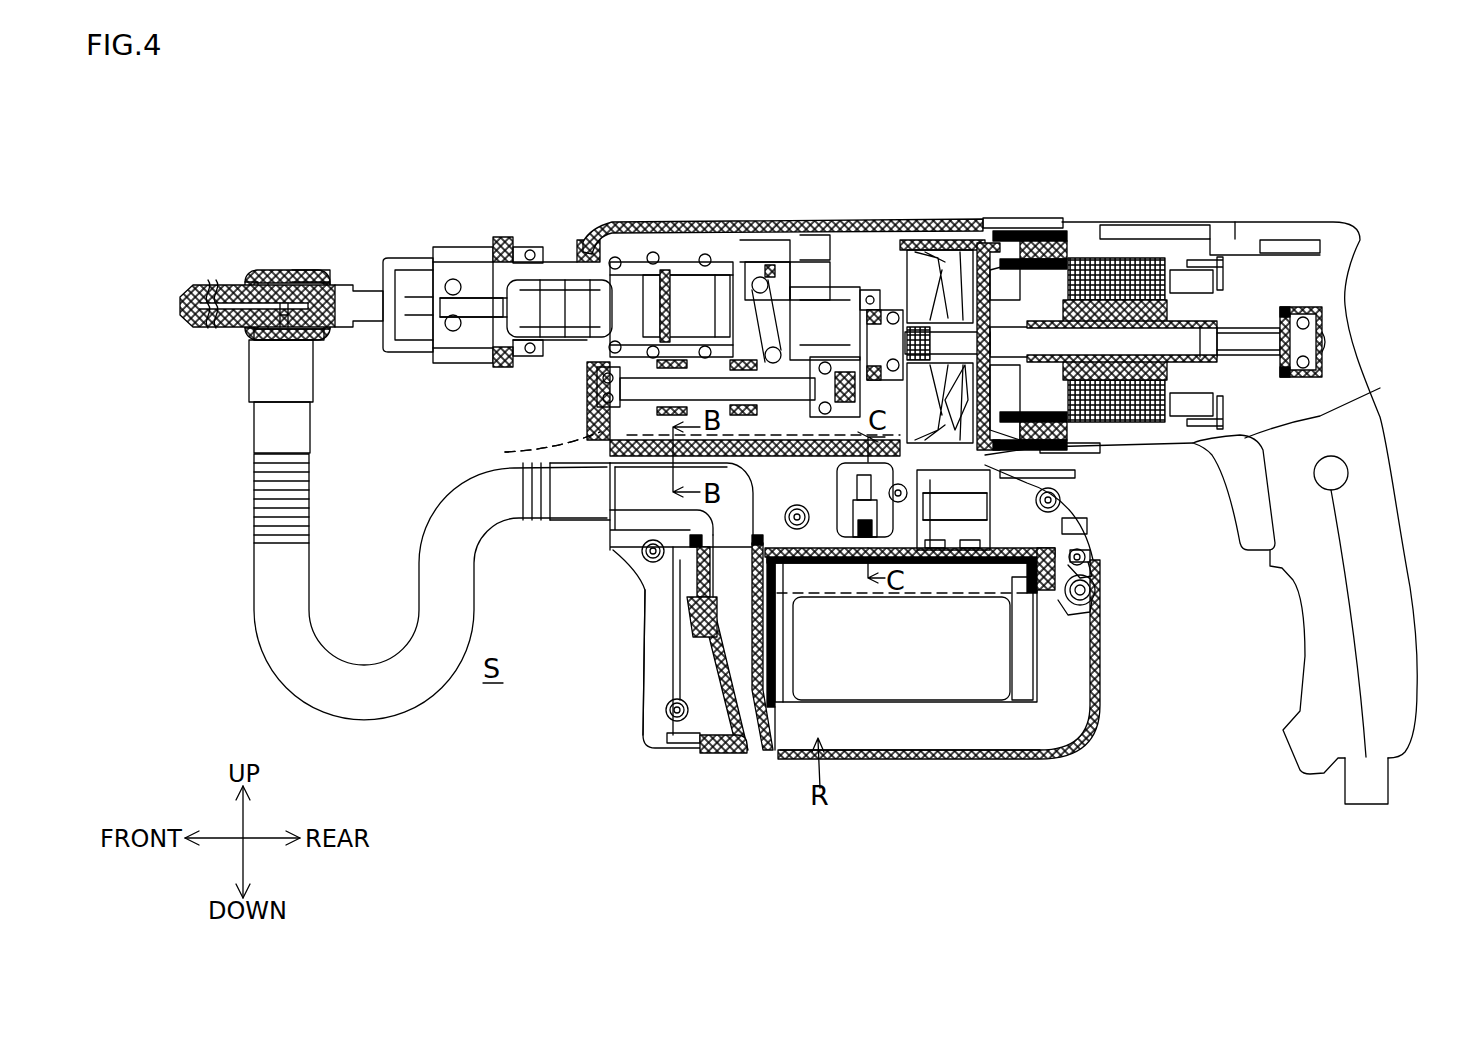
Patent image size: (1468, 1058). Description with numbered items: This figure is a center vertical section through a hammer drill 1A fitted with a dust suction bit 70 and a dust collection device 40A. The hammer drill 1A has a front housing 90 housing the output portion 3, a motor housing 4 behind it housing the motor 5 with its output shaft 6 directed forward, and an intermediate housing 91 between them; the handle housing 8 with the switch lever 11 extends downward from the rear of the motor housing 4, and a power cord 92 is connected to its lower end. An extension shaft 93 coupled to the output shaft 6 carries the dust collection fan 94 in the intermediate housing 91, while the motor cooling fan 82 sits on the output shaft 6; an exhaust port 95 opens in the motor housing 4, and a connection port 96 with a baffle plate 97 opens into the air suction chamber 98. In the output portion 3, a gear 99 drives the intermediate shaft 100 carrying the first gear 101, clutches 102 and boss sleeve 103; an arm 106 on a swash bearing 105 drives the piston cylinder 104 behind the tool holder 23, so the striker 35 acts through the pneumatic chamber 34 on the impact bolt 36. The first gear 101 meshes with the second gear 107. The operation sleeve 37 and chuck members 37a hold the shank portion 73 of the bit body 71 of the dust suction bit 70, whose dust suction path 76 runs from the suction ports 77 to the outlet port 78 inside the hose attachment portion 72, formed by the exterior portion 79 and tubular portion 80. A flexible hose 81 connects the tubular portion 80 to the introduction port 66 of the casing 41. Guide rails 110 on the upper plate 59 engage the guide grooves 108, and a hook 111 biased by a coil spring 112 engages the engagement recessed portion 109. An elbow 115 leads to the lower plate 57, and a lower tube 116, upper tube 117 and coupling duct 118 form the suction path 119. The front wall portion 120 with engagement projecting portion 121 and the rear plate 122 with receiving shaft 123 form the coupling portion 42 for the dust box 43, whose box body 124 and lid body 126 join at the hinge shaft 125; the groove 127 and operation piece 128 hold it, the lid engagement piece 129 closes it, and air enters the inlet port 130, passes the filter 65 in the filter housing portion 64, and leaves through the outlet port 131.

The hammer drill 1A is at (1005, 128).
The output portion 3 is at (832, 222).
The motor housing 4 is at (1180, 222).
The motor 5 is at (1136, 275).
The output shaft 6 is at (1050, 335).
The handle housing 8 is at (1390, 482).
The switch lever 11 is at (1248, 533).
The tool holder 23 is at (578, 250).
The pneumatic chamber 34 is at (727, 280).
The striker 35 is at (642, 252).
The impact bolt 36 is at (512, 272).
The operation sleeve 37 is at (466, 260).
The chuck members 37a is at (456, 282).
The dust collection device 40A is at (620, 693).
The casing 41 is at (638, 590).
The coupling portion 42 is at (683, 720).
The dust box 43 is at (1112, 688).
The lower plate 57 is at (1060, 540).
The upper plate 59 is at (770, 545).
The filter housing portion 64 is at (1020, 693).
The filter 65 is at (853, 688).
The introduction port 66 is at (583, 522).
The dust suction bit 70 is at (257, 262).
The bit body 71 is at (237, 290).
The hose attachment portion 72 is at (300, 272).
The shank portion 73 is at (428, 290).
The dust suction path 76 is at (268, 300).
The suction ports 77 is at (190, 292).
The outlet port 78 is at (262, 332).
The exterior portion 79 is at (325, 286).
The tubular portion 80 is at (308, 388).
The flexible hose 81 is at (350, 720).
The motor cooling fan 82 is at (1016, 240).
The front housing 90 is at (703, 250).
The intermediate housing 91 is at (952, 245).
The power cord 92 is at (1346, 792).
The extension shaft 93 is at (966, 250).
The dust collection fan 94 is at (932, 252).
The exhaust port 95 is at (1042, 448).
The connection port 96 is at (985, 435).
The baffle plate 97 is at (968, 400).
The air suction chamber 98 is at (893, 245).
The gear 99 is at (868, 262).
The intermediate shaft 100 is at (758, 246).
The first gear 101 is at (590, 418).
The clutches 102 is at (665, 290).
The boss sleeve 103 is at (806, 232).
The piston cylinder 104 is at (697, 262).
The swash bearing 105 is at (780, 548).
The arm 106 is at (812, 275).
The second gear 107 is at (616, 258).
The guide grooves 108 is at (492, 447).
The engagement recessed portion 109 is at (808, 463).
The guide rails 110 is at (492, 447).
The hook 111 is at (850, 480).
The coil spring 112 is at (885, 552).
The elbow 115 is at (628, 556).
The lower tube 116 is at (948, 560).
The upper tube 117 is at (1062, 476).
The coupling duct 118 is at (968, 555).
The suction path 119 is at (927, 555).
The front wall portion 120 is at (660, 667).
The engagement projecting portion 121 is at (690, 745).
The rear plate 122 is at (1088, 576).
The receiving shaft 123 is at (1095, 590).
The box body 124 is at (978, 762).
The hinge shaft 125 is at (1092, 556).
The lid body 126 is at (1070, 533).
The groove 127 is at (1088, 610).
The operation piece 128 is at (725, 753).
The lid engagement piece 129 is at (690, 613).
The inlet port 130 is at (695, 578).
The outlet port 131 is at (943, 540).